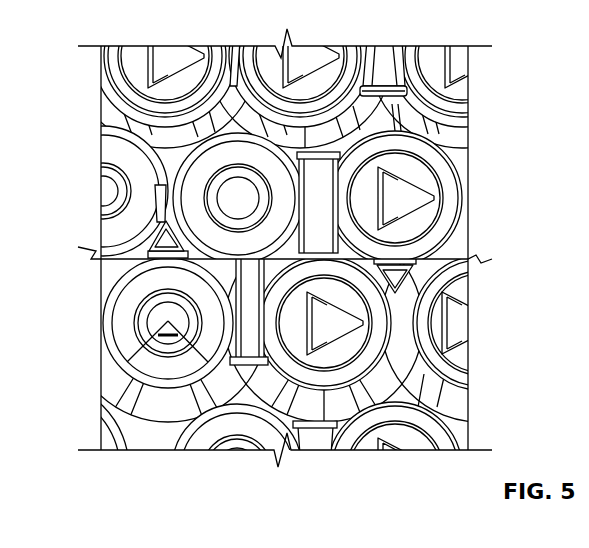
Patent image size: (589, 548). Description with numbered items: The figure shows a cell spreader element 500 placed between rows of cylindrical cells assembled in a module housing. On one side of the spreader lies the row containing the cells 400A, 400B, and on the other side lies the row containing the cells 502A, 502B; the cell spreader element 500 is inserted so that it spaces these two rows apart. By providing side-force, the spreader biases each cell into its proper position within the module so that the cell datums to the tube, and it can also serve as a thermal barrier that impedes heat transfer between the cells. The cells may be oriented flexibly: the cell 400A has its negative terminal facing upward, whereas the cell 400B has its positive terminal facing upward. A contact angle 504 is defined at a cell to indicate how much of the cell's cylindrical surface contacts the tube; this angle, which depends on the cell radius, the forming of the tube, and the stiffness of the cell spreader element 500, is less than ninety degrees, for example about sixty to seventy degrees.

The cell spreader element 500 is at (291, 132).
The cell 502A is at (150, 168).
The cell 502B is at (462, 163).
The cell 400A is at (126, 332).
The cell 400B is at (393, 331).
The contact angle 504 is at (170, 333).